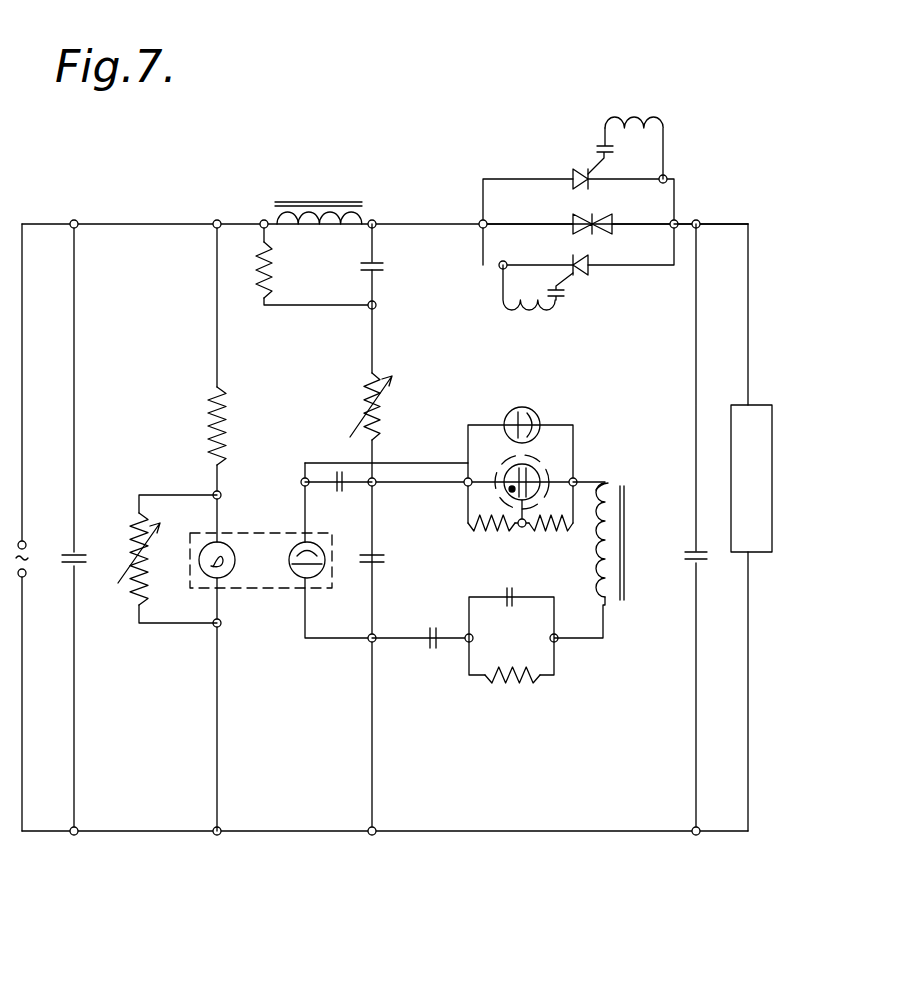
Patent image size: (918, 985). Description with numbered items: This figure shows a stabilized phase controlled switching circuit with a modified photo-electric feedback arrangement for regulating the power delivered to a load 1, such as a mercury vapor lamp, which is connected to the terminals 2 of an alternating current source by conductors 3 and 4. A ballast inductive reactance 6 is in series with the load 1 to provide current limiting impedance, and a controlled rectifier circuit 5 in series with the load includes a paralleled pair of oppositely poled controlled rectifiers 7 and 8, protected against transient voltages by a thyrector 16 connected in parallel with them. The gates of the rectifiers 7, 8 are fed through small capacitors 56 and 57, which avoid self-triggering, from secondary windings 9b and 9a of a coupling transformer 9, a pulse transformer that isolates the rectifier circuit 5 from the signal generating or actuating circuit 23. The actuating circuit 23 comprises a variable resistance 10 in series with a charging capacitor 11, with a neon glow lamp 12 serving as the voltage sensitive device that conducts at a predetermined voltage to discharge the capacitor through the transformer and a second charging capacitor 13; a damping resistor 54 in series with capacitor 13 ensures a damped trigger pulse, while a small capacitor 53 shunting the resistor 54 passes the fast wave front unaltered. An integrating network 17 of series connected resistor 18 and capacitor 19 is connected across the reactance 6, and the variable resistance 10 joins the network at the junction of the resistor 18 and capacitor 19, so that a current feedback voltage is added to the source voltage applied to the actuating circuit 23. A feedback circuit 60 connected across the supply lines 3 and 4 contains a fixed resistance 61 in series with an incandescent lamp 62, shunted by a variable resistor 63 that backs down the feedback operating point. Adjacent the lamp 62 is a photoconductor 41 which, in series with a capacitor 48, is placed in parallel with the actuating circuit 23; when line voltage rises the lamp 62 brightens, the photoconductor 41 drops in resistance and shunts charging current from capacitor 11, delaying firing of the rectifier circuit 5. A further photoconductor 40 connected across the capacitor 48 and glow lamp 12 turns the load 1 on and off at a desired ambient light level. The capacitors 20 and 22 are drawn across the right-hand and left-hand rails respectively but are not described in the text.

The load 1 is at (776, 486).
The terminals 2 is at (27, 544).
The conductor 3 is at (135, 223).
The conductor 4 is at (316, 832).
The controlled rectifier circuit 5 is at (684, 204).
The ballast inductive reactance 6 is at (325, 197).
The controlled rectifier 7 is at (571, 176).
The controlled rectifier 8 is at (592, 272).
The coupling transformer 9 is at (628, 548).
The secondary winding 9a is at (530, 316).
The secondary winding 9b is at (643, 118).
The variable resistance 10 is at (383, 406).
The charging capacitor 11 is at (387, 559).
The voltage sensitive device 12 is at (548, 478).
The second charging capacitor 13 is at (432, 652).
The thyrector 16 is at (598, 216).
The integrating network 17 is at (306, 310).
The resistor 18 is at (274, 264).
The capacitor 19 is at (385, 266).
The capacitor 20 is at (700, 566).
The capacitor 22 is at (92, 552).
The actuating circuit 23 is at (585, 497).
The photoconductor 40 is at (533, 410).
The photoconductor 41 is at (320, 572).
The capacitor 48 is at (335, 492).
The small capacitor 53 is at (509, 608).
The damping resistor 54 is at (512, 685).
The small capacitor 56 is at (596, 143).
The small capacitor 57 is at (568, 296).
The feedback circuit 60 is at (212, 300).
The resistance 61 is at (208, 422).
The incandescent lamp 62 is at (223, 548).
The variable resistor 63 is at (147, 583).